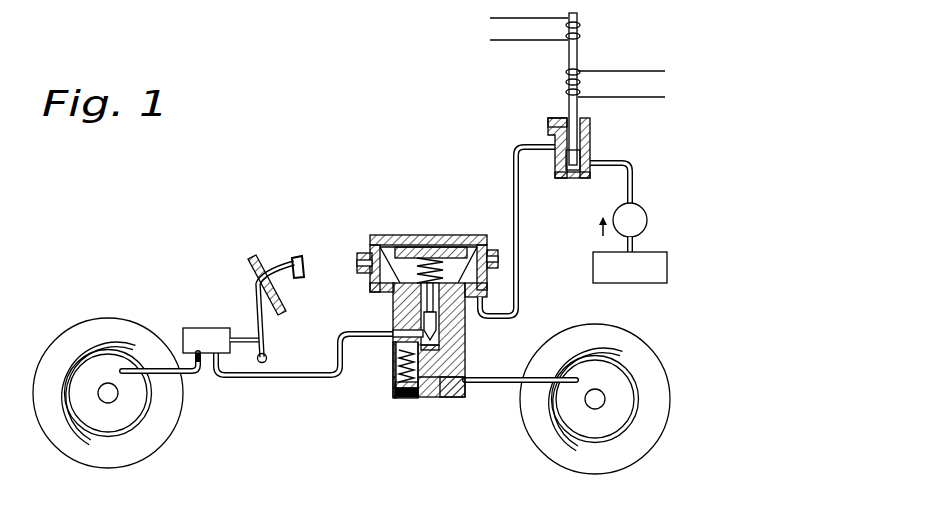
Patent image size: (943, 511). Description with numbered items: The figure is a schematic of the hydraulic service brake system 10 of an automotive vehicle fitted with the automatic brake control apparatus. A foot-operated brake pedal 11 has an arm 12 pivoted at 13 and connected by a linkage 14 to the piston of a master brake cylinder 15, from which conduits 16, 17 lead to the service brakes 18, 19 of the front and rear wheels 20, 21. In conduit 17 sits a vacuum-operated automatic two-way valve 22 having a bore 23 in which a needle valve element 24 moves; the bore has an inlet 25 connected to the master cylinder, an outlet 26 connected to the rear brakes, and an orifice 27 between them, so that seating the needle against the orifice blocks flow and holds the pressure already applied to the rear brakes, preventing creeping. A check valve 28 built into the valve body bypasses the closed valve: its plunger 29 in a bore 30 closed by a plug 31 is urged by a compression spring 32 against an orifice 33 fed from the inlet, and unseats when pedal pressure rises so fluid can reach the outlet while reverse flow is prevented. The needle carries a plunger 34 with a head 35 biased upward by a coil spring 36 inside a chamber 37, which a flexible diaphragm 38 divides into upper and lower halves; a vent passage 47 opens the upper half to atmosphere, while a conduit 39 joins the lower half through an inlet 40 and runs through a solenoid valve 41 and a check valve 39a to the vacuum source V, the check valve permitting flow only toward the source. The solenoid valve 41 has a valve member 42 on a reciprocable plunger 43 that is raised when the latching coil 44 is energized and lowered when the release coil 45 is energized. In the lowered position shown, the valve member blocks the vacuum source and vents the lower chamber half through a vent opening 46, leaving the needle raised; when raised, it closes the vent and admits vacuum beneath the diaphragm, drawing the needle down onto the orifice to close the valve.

The hydraulic service brake system 10 is at (305, 388).
The brake pedal 11 is at (298, 257).
The arm 12 is at (253, 290).
The pivot 13 is at (268, 358).
The linkage 14 is at (240, 338).
The master brake cylinder 15 is at (196, 330).
The conduit 16 is at (198, 378).
The conduit 17 is at (271, 379).
The service brake 18 is at (96, 366).
The service brake 19 is at (634, 391).
The front wheel 20 is at (58, 452).
The rear wheel 21 is at (650, 344).
The automatic two-way valve 22 is at (439, 317).
The bore 23 is at (440, 327).
The needle valve element 24 is at (420, 313).
The inlet 25 is at (410, 332).
The outlet 26 is at (456, 399).
The orifice 27 is at (463, 340).
The check valve 28 is at (392, 380).
The plunger 29 is at (394, 380).
The bore 30 is at (442, 399).
The plug 31 is at (420, 400).
The compression spring 32 is at (410, 399).
The orifice 33 is at (404, 352).
The plunger 34 is at (371, 249).
The head 35 is at (408, 235).
The coil spring 36 is at (432, 247).
The chamber 37 is at (370, 284).
The diaphragm 38 is at (481, 244).
The conduit 39 is at (513, 184).
The check valve 39a is at (648, 221).
The inlet 40 is at (484, 280).
The solenoid valve 41 is at (597, 144).
The valve member 42 is at (558, 179).
The reciprocable plunger 43 is at (578, 108).
The latching coil 44 is at (578, 41).
The release coil 45 is at (568, 94).
The vent opening 46 is at (548, 127).
The vent passage 47 is at (468, 238).
The vacuum source V is at (667, 268).